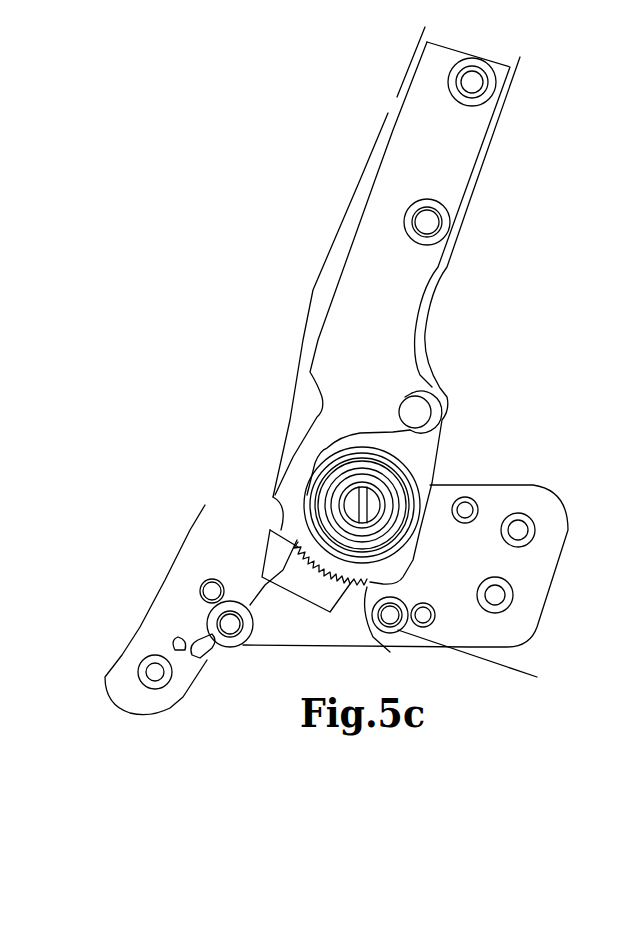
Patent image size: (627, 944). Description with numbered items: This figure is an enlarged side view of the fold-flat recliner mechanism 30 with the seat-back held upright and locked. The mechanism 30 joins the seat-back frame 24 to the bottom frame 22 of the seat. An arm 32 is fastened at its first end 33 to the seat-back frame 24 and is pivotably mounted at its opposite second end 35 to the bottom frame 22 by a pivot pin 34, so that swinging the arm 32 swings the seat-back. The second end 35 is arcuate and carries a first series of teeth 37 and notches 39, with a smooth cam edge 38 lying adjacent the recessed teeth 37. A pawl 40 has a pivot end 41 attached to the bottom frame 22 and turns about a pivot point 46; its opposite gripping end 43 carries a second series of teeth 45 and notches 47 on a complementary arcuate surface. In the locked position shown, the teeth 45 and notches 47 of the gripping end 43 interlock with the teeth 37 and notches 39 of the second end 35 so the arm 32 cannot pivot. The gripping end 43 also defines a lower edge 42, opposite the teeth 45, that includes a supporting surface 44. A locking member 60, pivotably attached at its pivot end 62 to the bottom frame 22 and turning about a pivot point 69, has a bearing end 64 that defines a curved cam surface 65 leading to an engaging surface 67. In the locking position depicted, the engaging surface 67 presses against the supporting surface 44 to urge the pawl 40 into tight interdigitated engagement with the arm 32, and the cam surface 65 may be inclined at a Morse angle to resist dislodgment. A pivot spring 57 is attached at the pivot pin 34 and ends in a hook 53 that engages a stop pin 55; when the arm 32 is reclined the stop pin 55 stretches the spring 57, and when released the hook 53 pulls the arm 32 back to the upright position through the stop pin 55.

The bottom frame 22 is at (528, 595).
The seat-back frame 24 is at (473, 187).
The fold-flat recliner mechanism 30 is at (331, 191).
The arm 32 is at (410, 285).
The first end 33 is at (477, 123).
The pivot pin 34 is at (377, 497).
The second end 35 is at (303, 462).
The teeth 37 is at (390, 652).
The cam edge 38 is at (273, 533).
The notches 39 is at (343, 590).
The pawl 40 is at (320, 590).
The pivot end 41 is at (481, 658).
The lower edge 42 is at (270, 600).
The gripping end 43 is at (268, 503).
The supporting surface 44 is at (277, 590).
The teeth 45 is at (281, 530).
The pivot point 46 is at (405, 603).
The notches 47 is at (315, 592).
The hook 53 is at (420, 412).
The stop pin 55 is at (440, 403).
The pivot spring 57 is at (417, 495).
The locking member 60 is at (190, 685).
The pivot end 62 is at (152, 688).
The bearing end 64 is at (213, 662).
The cam surface 65 is at (260, 541).
The engaging surface 67 is at (270, 570).
The pivot point 69 is at (103, 685).